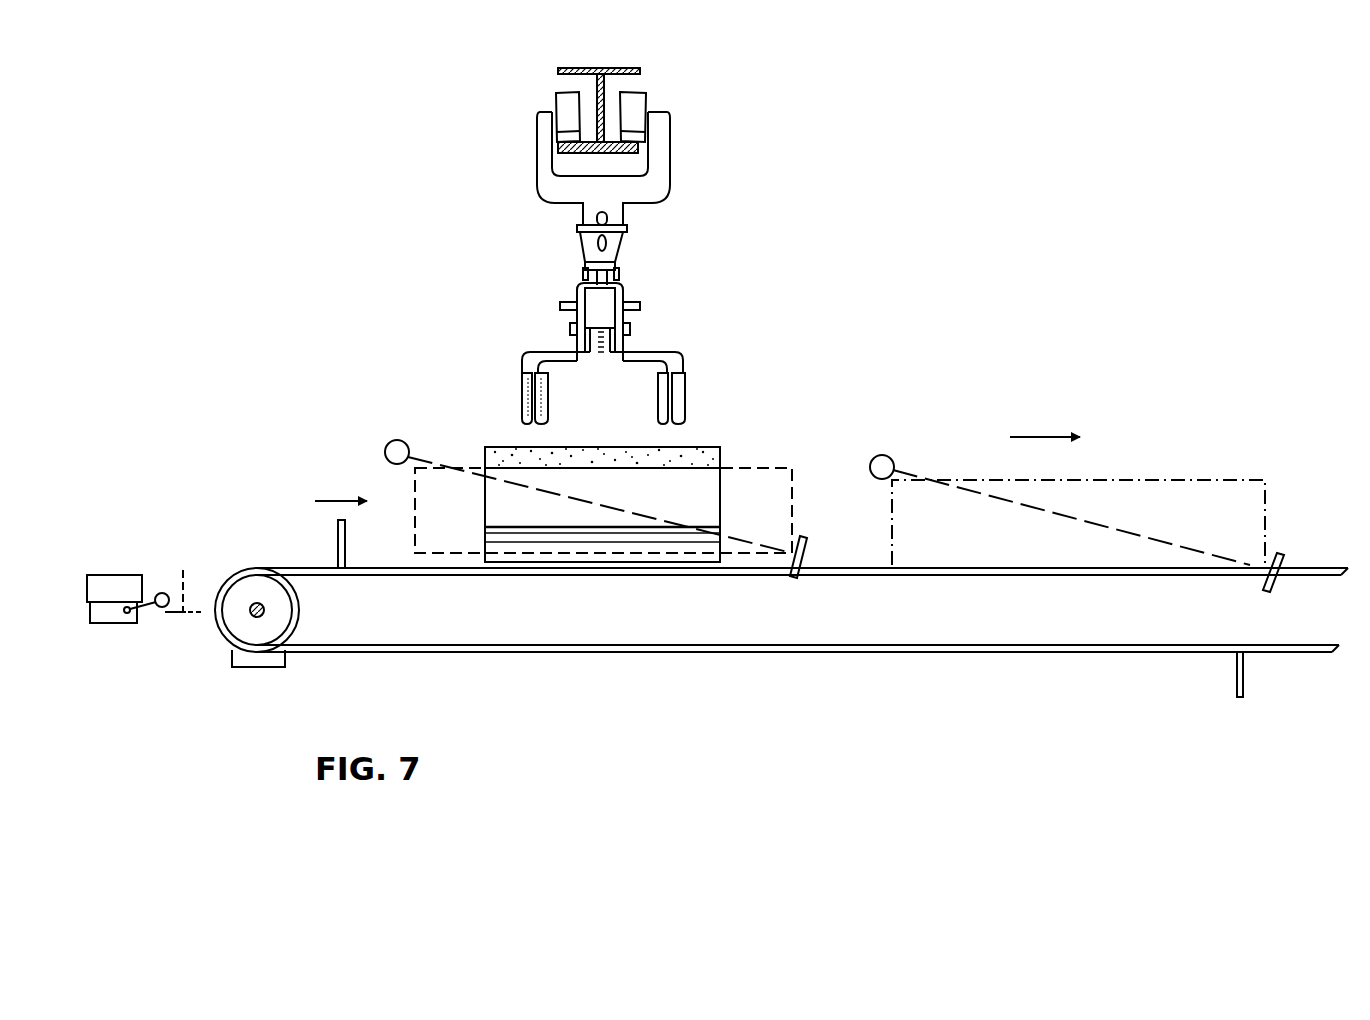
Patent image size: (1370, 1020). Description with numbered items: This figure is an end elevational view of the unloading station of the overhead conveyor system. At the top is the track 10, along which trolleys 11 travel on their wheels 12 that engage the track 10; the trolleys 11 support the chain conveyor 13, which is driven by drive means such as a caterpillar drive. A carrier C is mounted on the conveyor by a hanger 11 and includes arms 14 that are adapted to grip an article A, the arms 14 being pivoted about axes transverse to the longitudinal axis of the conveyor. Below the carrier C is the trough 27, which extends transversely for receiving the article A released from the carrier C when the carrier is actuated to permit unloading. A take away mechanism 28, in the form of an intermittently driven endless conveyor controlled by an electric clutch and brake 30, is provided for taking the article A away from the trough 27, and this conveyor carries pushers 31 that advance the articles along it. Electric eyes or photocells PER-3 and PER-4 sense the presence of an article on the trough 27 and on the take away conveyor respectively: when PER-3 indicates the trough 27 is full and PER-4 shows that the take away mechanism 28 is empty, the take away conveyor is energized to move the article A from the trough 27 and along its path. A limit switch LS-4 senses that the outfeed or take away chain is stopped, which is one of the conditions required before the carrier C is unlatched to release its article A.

The track 10 is at (617, 70).
The trolley 11 is at (652, 175).
The wheels 12 is at (554, 102).
The chain conveyor 13 is at (627, 228).
The arms 14 is at (521, 397).
The trough 27 is at (705, 447).
The take away mechanism 28 is at (708, 654).
The electric clutch and brake 30 is at (258, 648).
The pushers 31 is at (184, 578).
The carrier C is at (668, 322).
The article A is at (757, 466).
The electric eye PER-3 is at (412, 424).
The electric eye PER-4 is at (905, 437).
The limit switch LS-4 is at (116, 623).